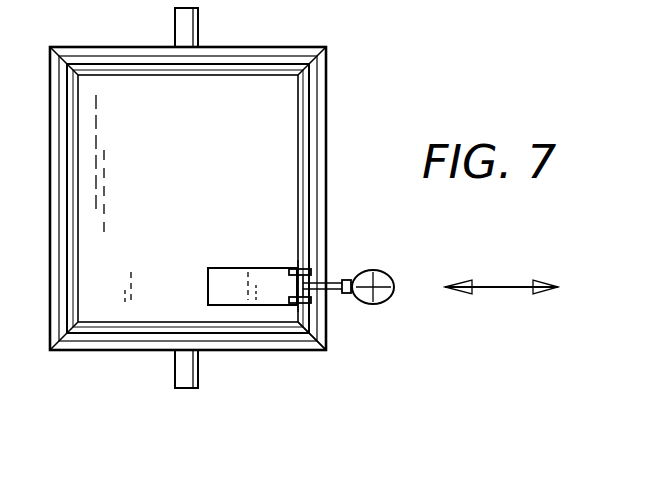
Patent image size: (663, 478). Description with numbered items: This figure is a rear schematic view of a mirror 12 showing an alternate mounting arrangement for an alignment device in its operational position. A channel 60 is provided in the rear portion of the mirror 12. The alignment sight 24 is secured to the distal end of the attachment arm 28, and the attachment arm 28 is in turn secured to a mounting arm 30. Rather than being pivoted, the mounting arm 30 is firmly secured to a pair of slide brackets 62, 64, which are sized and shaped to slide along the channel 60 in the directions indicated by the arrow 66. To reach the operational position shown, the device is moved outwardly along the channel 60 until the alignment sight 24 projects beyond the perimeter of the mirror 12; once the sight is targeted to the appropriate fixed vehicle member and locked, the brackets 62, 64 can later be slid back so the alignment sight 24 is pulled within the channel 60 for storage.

The mirror 12 is at (235, 60).
The alignment sight 24 is at (380, 277).
The attachment arm 28 is at (333, 288).
The mounting arm 30 is at (288, 273).
The channel 60 is at (226, 286).
The slide bracket 62 is at (305, 336).
The slide bracket 64 is at (299, 267).
The arrow 66 is at (503, 287).